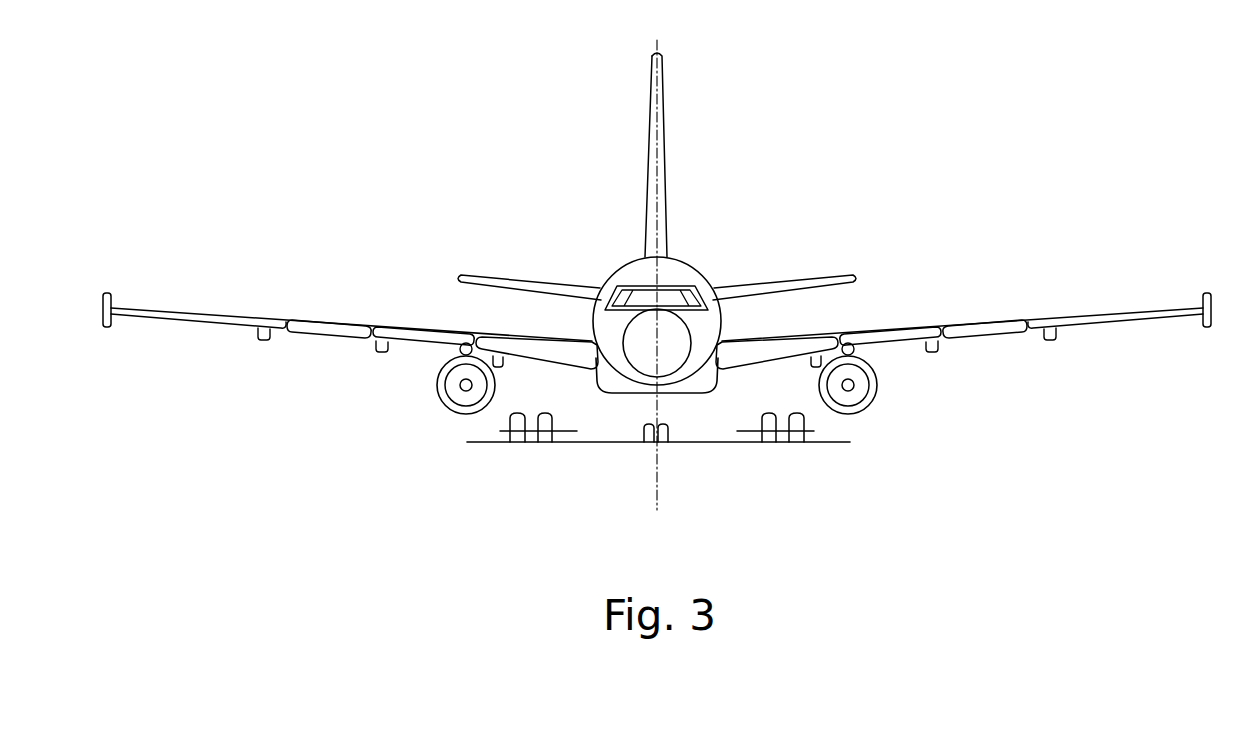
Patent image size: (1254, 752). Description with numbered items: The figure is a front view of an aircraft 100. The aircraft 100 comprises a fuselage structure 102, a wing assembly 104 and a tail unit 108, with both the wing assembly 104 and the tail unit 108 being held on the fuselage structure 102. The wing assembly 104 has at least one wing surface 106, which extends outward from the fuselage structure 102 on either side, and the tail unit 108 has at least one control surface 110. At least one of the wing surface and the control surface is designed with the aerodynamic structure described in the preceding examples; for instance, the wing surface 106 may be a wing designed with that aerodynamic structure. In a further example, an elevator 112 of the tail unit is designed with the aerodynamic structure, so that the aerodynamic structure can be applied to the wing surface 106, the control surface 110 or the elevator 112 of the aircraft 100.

The aircraft 100 is at (657, 275).
The fuselage structure 102 is at (695, 268).
The wing assembly 104 is at (963, 305).
The wing surface 106 is at (975, 321).
The tail unit 108 is at (670, 120).
The control surface 110 is at (645, 183).
The elevator 112 is at (481, 275).